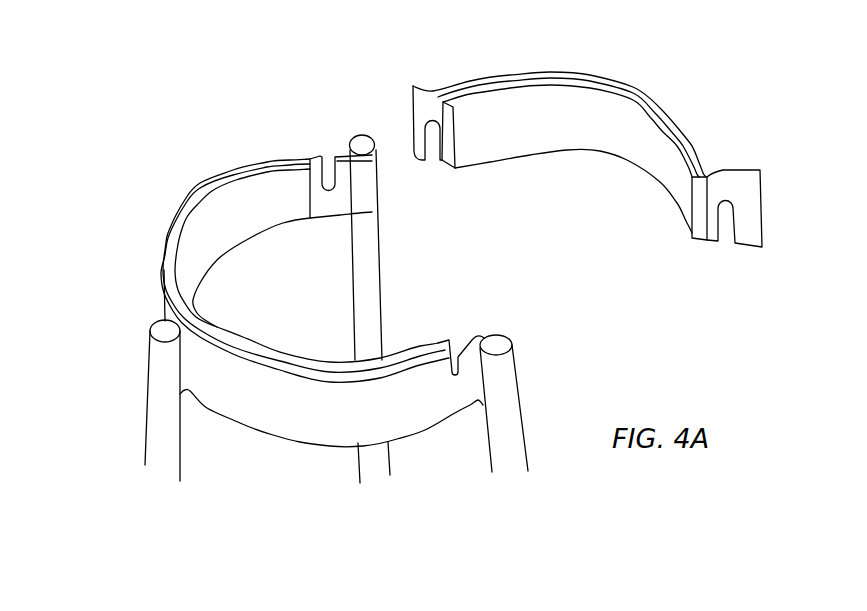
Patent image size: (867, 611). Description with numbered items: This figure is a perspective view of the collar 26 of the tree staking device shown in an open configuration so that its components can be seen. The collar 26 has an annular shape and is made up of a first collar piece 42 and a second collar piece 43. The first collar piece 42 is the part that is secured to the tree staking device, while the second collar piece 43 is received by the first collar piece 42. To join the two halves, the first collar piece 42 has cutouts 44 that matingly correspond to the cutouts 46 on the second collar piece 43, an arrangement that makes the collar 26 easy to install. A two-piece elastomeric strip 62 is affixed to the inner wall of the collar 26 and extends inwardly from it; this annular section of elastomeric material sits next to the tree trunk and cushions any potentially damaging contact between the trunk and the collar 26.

The collar 26 is at (209, 117).
The first collar piece 42 is at (724, 233).
The second collar piece 43 is at (693, 122).
The cutouts 44 is at (327, 155).
The cutouts 46 is at (435, 162).
The two-piece elastomeric strip 62 is at (237, 229).